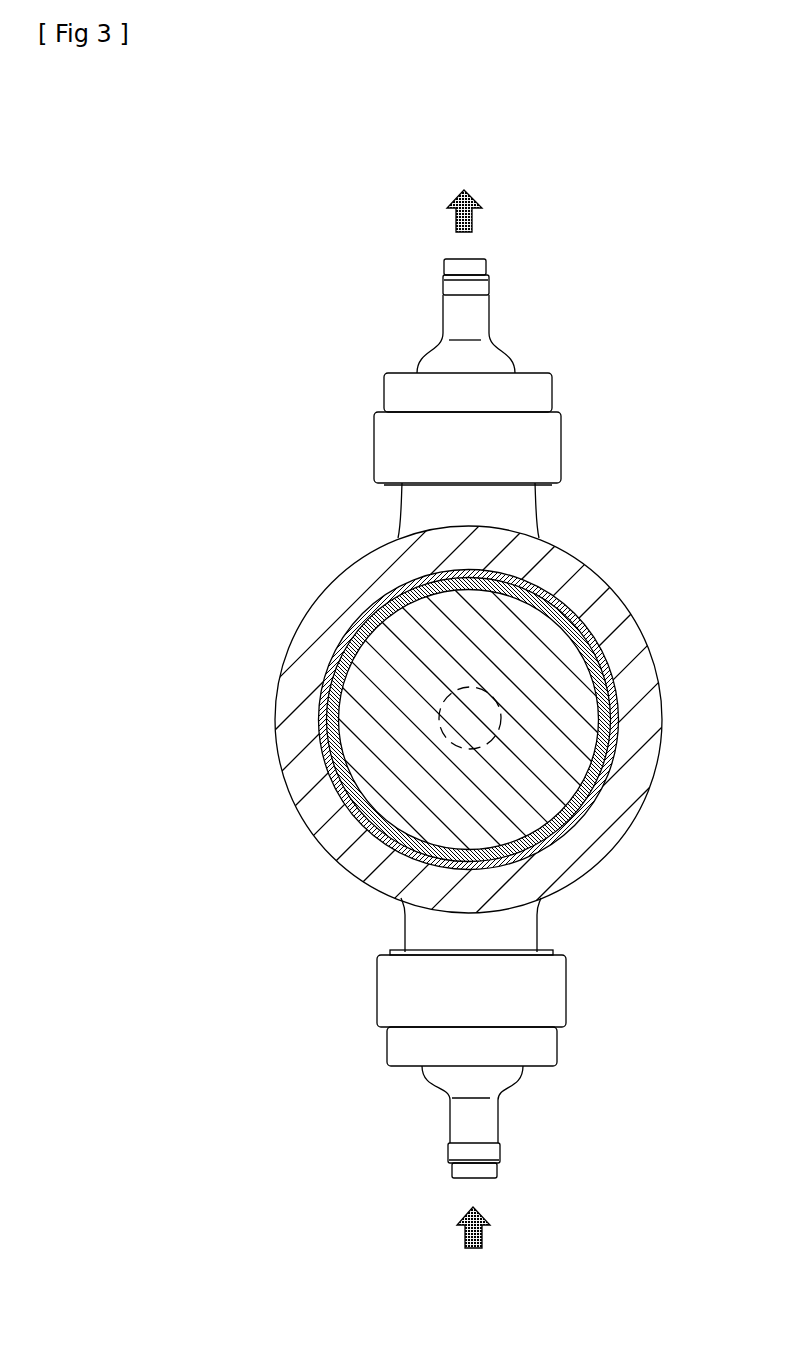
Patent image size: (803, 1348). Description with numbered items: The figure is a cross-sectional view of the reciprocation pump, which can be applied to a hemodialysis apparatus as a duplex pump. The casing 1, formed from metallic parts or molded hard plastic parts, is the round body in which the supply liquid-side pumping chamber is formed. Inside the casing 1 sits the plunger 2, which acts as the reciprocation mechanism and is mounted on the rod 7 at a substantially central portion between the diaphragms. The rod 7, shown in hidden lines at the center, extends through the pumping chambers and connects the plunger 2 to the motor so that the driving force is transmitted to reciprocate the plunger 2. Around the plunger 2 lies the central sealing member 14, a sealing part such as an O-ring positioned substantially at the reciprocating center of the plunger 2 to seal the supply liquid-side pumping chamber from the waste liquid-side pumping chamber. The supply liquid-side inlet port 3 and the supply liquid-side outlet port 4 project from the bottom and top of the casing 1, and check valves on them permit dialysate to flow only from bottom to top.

The casing 1 is at (293, 633).
The plunger 2 is at (553, 645).
The supply liquid-side inlet port 3 is at (498, 1124).
The supply liquid-side outlet port 4 is at (489, 312).
The rod 7 is at (497, 735).
The central sealing member 14 is at (615, 679).